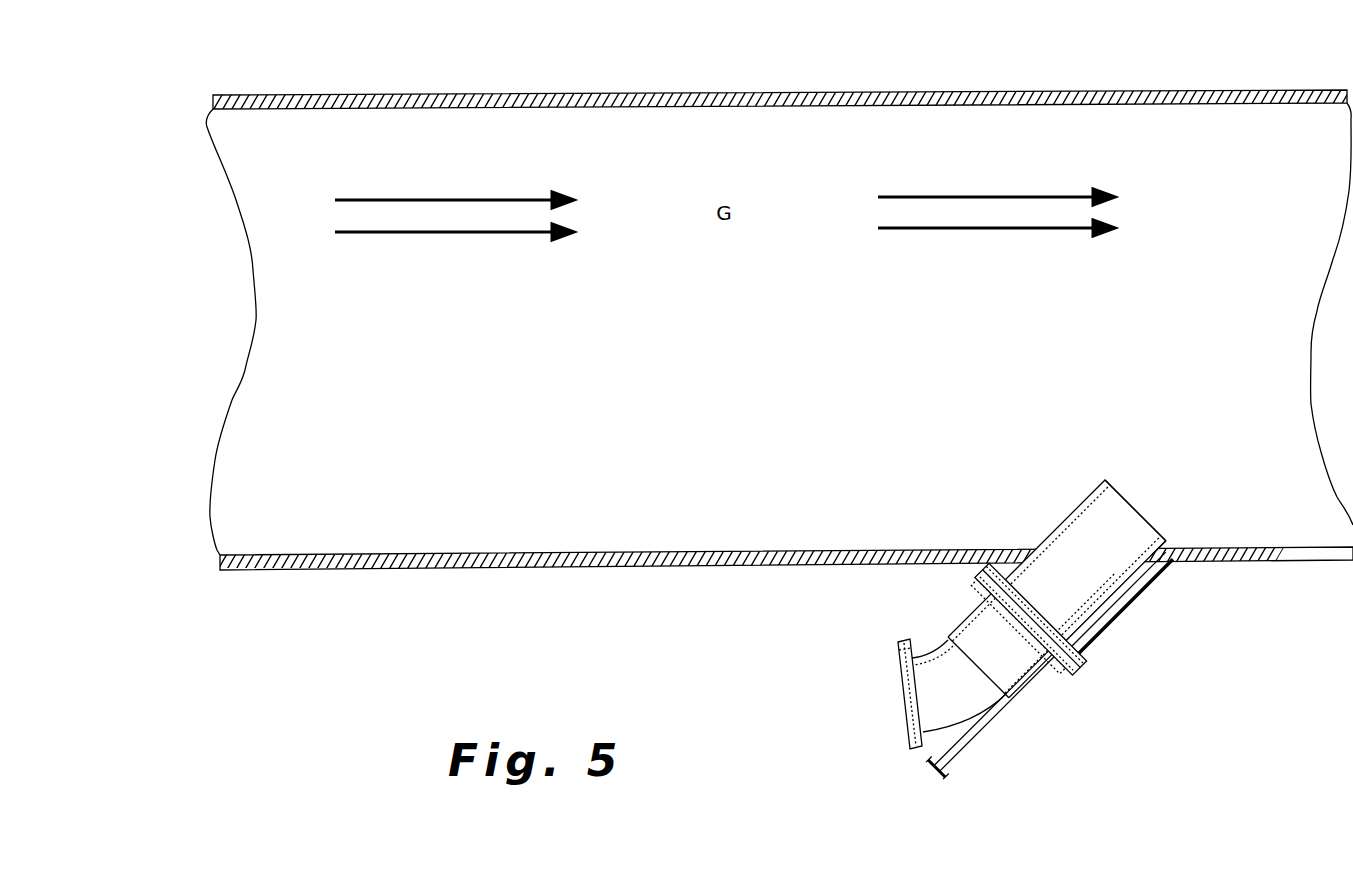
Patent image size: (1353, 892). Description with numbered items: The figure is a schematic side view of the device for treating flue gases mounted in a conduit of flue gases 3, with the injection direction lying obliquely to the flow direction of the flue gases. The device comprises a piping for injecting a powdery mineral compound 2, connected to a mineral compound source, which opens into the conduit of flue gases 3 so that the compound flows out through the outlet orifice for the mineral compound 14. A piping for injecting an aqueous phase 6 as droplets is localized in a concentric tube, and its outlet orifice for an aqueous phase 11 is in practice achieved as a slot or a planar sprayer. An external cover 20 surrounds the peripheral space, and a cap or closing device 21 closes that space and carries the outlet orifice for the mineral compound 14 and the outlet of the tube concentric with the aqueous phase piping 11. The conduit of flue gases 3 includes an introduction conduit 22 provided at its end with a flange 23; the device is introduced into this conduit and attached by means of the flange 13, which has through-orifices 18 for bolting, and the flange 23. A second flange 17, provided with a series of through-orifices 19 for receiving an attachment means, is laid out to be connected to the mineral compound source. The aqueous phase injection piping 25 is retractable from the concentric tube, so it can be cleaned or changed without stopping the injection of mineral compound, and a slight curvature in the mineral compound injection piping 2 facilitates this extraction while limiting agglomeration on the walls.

The piping for injecting a powdery mineral compound 2 is at (940, 695).
The conduit of flue gases 3 is at (838, 92).
The piping for injecting an aqueous phase 6 is at (1113, 588).
The outlet orifice for an aqueous phase 11 is at (1170, 531).
The flange 13 is at (1043, 652).
The outlet orifice for the mineral compound 14 is at (1136, 501).
The second flange 17 is at (910, 693).
The through-orifices 18 is at (972, 587).
The through-orifices 19 is at (898, 648).
The external cover 20 is at (1060, 528).
The cap or device for closing the peripheral space 21 is at (1157, 538).
The introduction conduit 22 is at (1097, 620).
The flange 23 is at (1067, 655).
The aqueous phase injection piping 25 is at (978, 732).